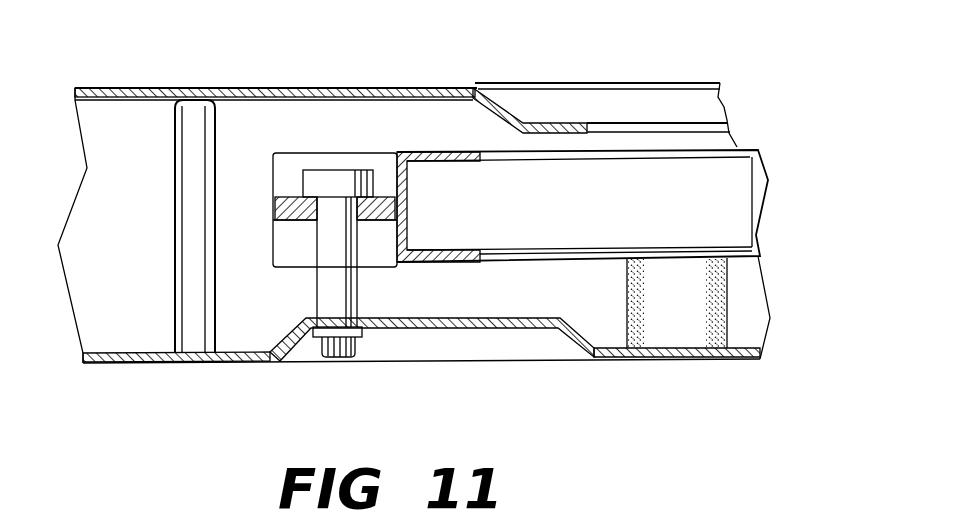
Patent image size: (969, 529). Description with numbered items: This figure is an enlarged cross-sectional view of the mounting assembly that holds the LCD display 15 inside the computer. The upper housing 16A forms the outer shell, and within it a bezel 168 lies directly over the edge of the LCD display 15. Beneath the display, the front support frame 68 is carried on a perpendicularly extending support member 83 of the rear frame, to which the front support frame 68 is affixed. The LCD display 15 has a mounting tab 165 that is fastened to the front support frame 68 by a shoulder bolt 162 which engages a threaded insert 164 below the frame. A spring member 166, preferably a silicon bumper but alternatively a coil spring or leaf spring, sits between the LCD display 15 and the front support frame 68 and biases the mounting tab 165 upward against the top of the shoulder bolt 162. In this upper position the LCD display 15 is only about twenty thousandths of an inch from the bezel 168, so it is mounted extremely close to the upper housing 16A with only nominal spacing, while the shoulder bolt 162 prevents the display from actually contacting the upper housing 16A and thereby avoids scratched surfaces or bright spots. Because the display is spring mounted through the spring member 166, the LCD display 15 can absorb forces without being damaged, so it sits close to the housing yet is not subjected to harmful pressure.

The upper housing 16A is at (315, 87).
The bezel 168 is at (508, 103).
The LCD display 15 is at (635, 152).
The mounting tab 165 is at (278, 209).
The support member 83 is at (185, 280).
The shoulder bolt 162 is at (317, 282).
The spring member 166 is at (638, 318).
The threaded insert 164 is at (357, 345).
The front support frame 68 is at (667, 360).